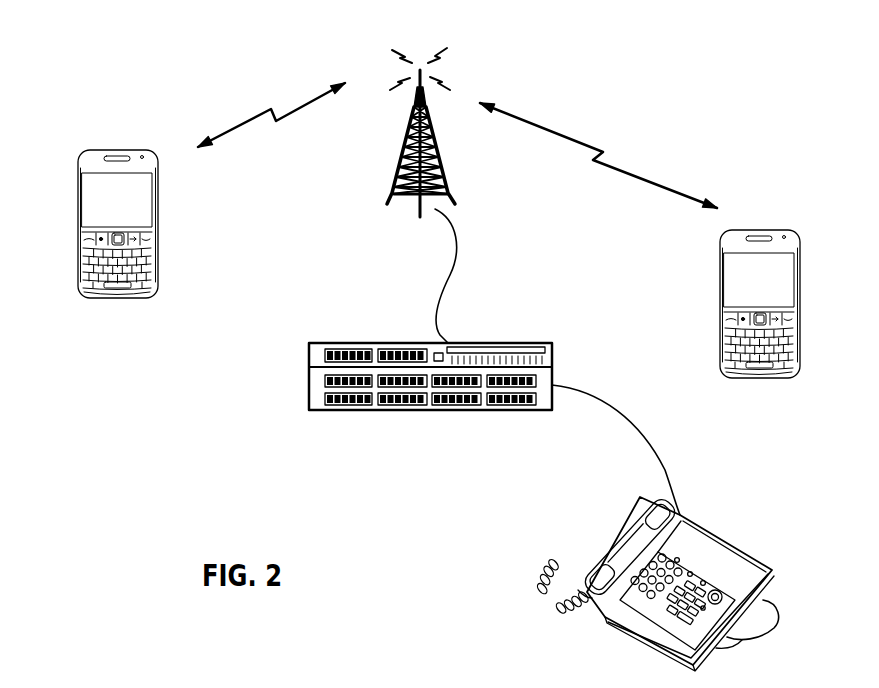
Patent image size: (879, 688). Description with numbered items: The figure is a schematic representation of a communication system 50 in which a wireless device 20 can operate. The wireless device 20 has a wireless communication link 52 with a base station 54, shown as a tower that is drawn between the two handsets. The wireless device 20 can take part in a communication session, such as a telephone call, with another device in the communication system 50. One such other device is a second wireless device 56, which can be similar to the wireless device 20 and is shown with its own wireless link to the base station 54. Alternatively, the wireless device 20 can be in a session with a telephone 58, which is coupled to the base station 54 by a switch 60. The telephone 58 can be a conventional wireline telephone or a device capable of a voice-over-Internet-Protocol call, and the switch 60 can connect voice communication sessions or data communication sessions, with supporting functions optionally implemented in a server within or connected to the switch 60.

The wireless device 20 is at (78, 216).
The communication system 50 is at (686, 90).
The wireless communication link 52 is at (245, 120).
The base station 54 is at (437, 154).
The wireless device 56 is at (801, 300).
The telephone 58 is at (728, 542).
The switch 60 is at (309, 373).